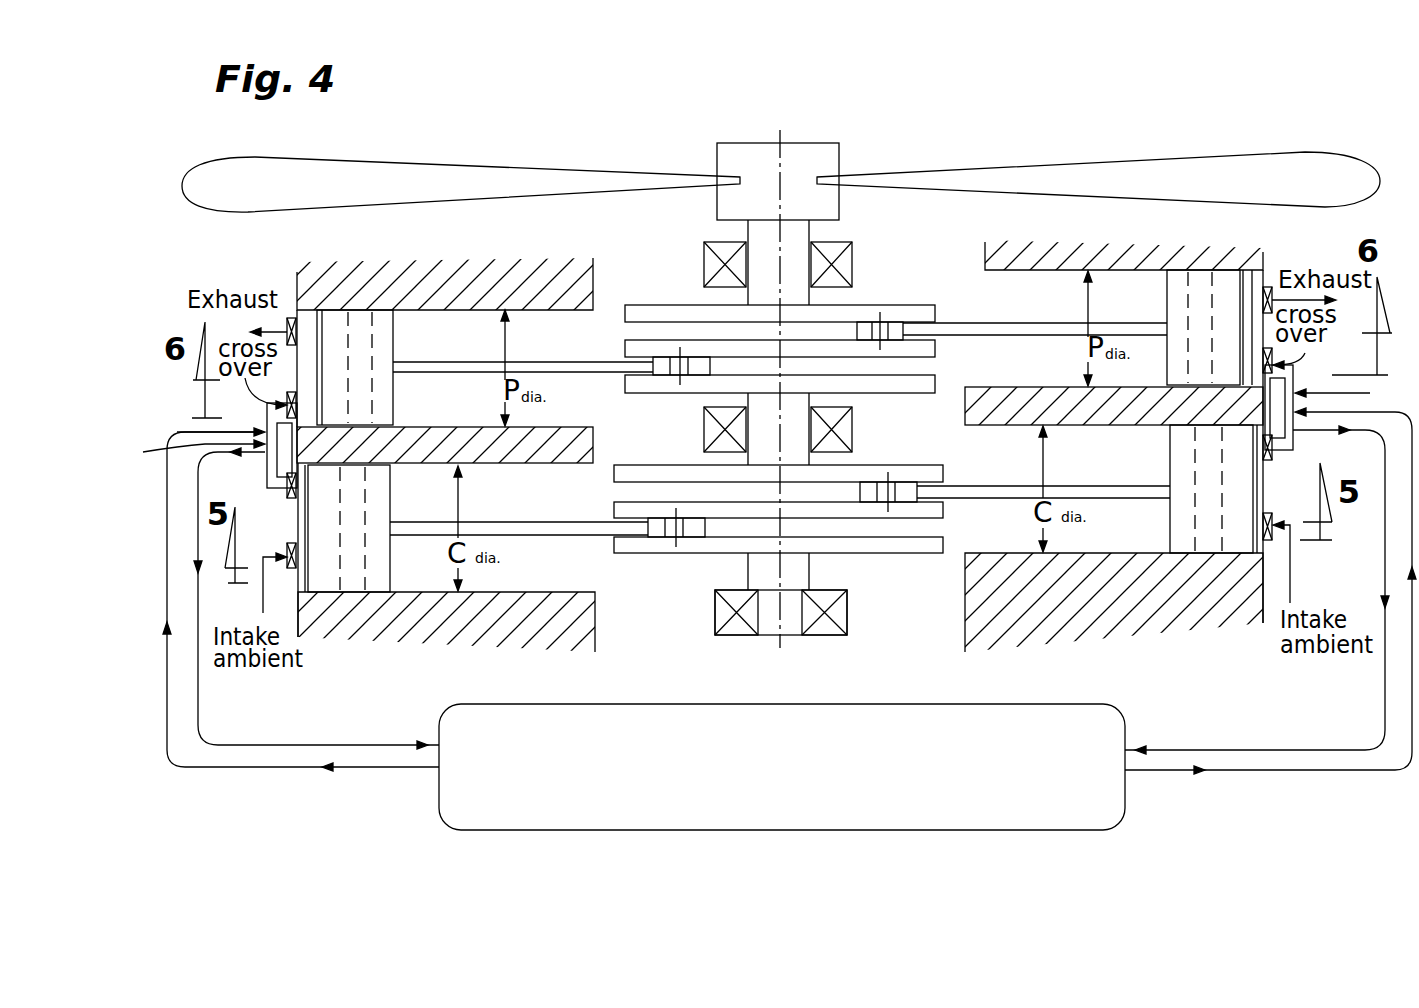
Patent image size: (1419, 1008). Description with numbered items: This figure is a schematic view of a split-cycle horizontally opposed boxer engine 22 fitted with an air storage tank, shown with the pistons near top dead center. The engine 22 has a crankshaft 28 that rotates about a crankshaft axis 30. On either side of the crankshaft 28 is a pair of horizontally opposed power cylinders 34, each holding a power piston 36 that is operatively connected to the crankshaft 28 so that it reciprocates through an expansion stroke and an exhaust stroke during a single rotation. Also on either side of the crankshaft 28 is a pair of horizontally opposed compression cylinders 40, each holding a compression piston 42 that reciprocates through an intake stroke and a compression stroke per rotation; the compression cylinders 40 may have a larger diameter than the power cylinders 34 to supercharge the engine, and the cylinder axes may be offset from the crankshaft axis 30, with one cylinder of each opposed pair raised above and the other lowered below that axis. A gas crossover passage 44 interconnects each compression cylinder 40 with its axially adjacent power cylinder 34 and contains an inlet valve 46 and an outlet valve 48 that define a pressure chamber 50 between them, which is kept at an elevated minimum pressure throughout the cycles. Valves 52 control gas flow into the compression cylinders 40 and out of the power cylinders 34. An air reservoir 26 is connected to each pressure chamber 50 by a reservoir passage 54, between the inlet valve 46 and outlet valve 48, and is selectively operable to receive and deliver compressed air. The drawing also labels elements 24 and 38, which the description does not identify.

The split-cycle boxer engine 22 is at (960, 132).
The propeller 24 is at (485, 163).
The air reservoir 26 is at (753, 832).
The crankshaft 28 is at (748, 572).
The crankshaft axis 30 is at (781, 655).
The power cylinder 34 is at (573, 300).
The power piston 36 is at (395, 334).
The end wall 38 is at (415, 635).
The compression cylinder 40 is at (515, 590).
The compression piston 42 is at (392, 495).
The gas crossover passage 44 is at (757, 423).
The inlet valve 46 is at (287, 497).
The outlet valve 48 is at (268, 420).
The pressure chamber 50 is at (266, 463).
The valve 52 is at (288, 317).
The reservoir passage 54 is at (330, 741).